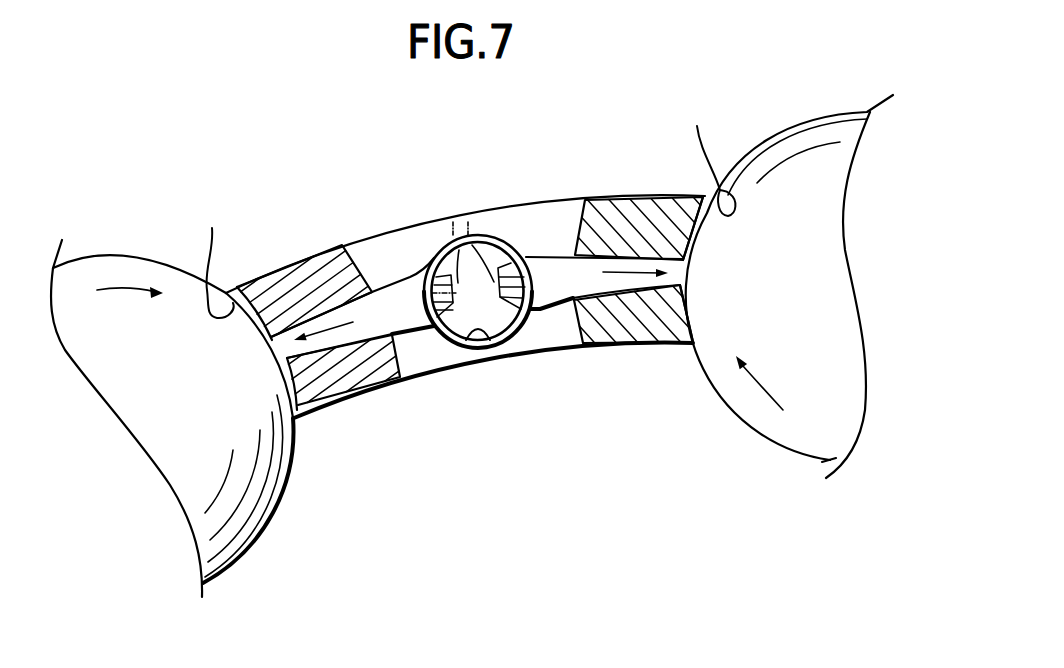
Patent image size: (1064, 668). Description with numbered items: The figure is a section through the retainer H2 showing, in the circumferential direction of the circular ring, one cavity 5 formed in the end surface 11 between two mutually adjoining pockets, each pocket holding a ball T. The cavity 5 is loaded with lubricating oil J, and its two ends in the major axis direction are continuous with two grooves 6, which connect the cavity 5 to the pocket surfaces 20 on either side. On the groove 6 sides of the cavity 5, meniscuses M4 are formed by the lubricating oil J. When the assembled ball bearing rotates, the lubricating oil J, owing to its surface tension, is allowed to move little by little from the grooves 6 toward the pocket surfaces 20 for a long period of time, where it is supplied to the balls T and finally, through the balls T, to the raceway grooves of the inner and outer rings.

The balls T is at (113, 252).
The pocket surfaces 20 is at (463, 208).
The retainer H2 is at (528, 155).
The end surfaces 11 is at (543, 342).
The grooves 6 is at (410, 307).
The lubricating oil J is at (352, 322).
The cavities 5 is at (480, 342).
The meniscuses M4 is at (468, 226).